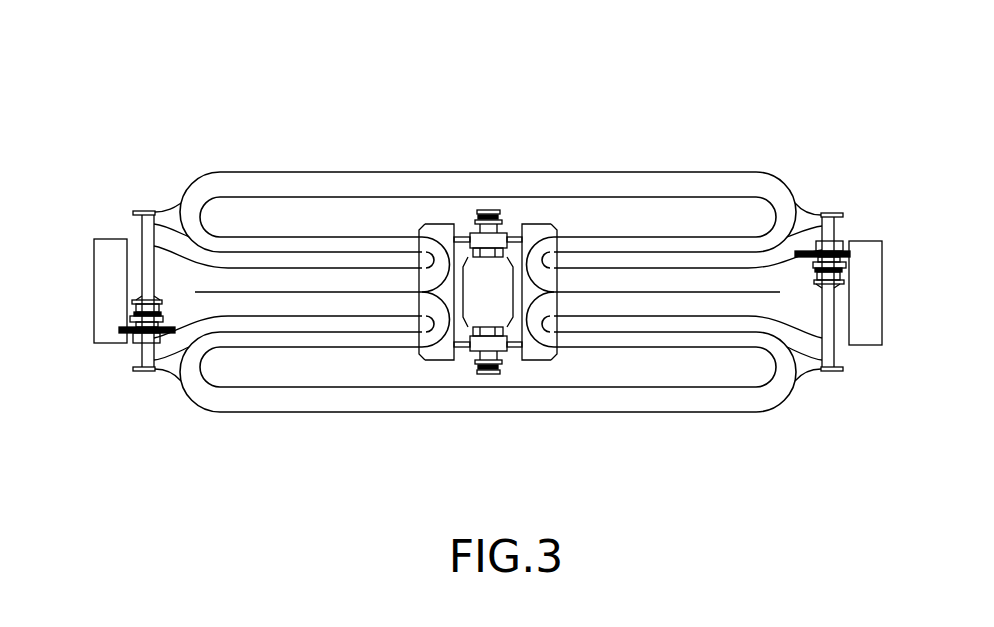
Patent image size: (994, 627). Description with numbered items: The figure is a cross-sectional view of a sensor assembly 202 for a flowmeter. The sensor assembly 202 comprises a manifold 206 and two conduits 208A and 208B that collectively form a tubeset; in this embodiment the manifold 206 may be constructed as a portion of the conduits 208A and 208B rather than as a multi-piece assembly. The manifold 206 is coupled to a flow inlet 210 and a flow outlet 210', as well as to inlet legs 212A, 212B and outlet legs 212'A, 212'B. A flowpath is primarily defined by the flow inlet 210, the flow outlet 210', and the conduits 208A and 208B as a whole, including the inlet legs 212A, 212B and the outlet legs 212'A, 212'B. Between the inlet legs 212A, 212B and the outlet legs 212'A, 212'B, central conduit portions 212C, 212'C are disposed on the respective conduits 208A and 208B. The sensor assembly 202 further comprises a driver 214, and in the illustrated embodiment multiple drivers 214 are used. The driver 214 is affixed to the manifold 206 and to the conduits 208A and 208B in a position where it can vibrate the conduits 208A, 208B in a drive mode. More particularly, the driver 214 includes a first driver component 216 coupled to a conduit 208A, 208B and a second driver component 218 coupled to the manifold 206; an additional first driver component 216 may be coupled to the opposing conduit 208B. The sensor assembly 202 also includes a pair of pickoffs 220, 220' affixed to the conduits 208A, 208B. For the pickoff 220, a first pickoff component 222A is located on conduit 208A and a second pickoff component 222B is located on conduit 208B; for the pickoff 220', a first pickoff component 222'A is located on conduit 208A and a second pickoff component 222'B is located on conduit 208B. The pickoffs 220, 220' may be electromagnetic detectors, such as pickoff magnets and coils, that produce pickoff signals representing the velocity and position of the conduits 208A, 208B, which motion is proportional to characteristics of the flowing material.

The sensor assembly 202 is at (212, 86).
The manifold 206 is at (465, 272).
The conduit 208A is at (336, 192).
The conduit 208B is at (245, 405).
The flow inlet 210 is at (308, 222).
The flow outlet 210' is at (667, 360).
The inlet leg 212A is at (388, 240).
The inlet leg 212B is at (328, 342).
The central conduit portion 212C is at (617, 181).
The outlet leg 212'A is at (642, 209).
The outlet leg 212'B is at (646, 371).
The central conduit portion 212'C is at (488, 427).
The driver 214 is at (500, 243).
The first driver component 216 is at (490, 212).
The second driver component 218 is at (478, 250).
The pickoff 220 is at (106, 319).
The pickoff 220' is at (854, 239).
The first pickoff component 222A is at (142, 294).
The second pickoff component 222B is at (150, 338).
The first pickoff component 222'A is at (813, 229).
The second pickoff component 222'B is at (827, 343).